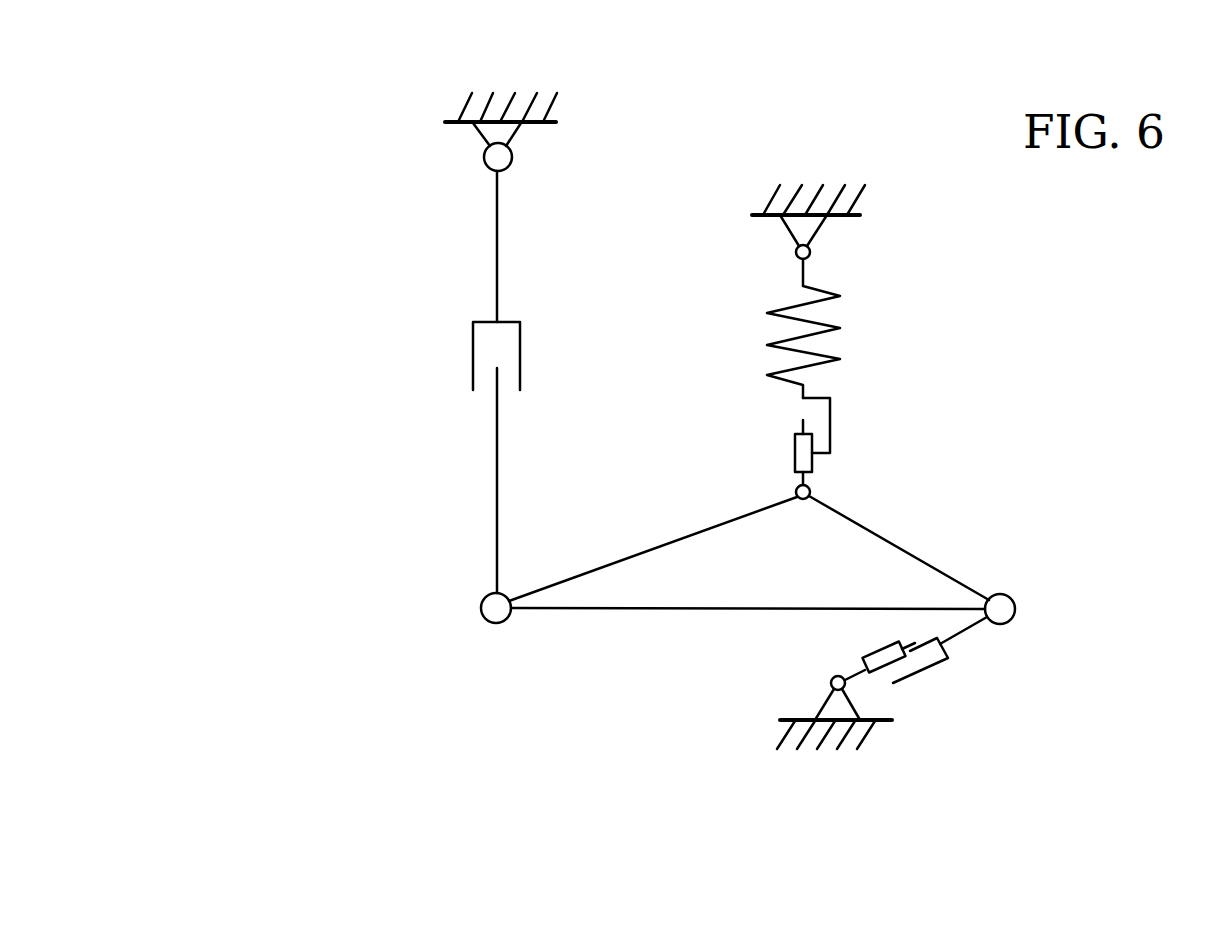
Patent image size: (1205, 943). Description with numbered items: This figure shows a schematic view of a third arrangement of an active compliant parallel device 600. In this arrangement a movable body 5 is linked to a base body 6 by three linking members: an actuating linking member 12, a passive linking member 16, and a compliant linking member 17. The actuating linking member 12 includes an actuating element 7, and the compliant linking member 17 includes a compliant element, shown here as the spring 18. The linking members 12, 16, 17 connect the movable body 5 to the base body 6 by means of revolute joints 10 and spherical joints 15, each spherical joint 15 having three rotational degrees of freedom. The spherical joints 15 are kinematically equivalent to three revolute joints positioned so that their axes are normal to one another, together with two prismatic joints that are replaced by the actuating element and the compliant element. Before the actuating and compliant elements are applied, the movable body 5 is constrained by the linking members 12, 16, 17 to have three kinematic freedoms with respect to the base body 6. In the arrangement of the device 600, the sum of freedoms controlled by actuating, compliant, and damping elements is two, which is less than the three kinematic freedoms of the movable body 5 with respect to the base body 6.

The movable body 5 is at (893, 530).
The base body 6 is at (820, 167).
The actuating element 7 is at (527, 357).
The revolute joints 10 is at (790, 253).
The actuating linking member 12 is at (460, 163).
The spherical joints 15 is at (528, 155).
The passive linking member 16 is at (1043, 672).
The compliant linking member 17 is at (835, 253).
The spring 18 is at (837, 341).
The active compliant parallel device 600 is at (333, 763).